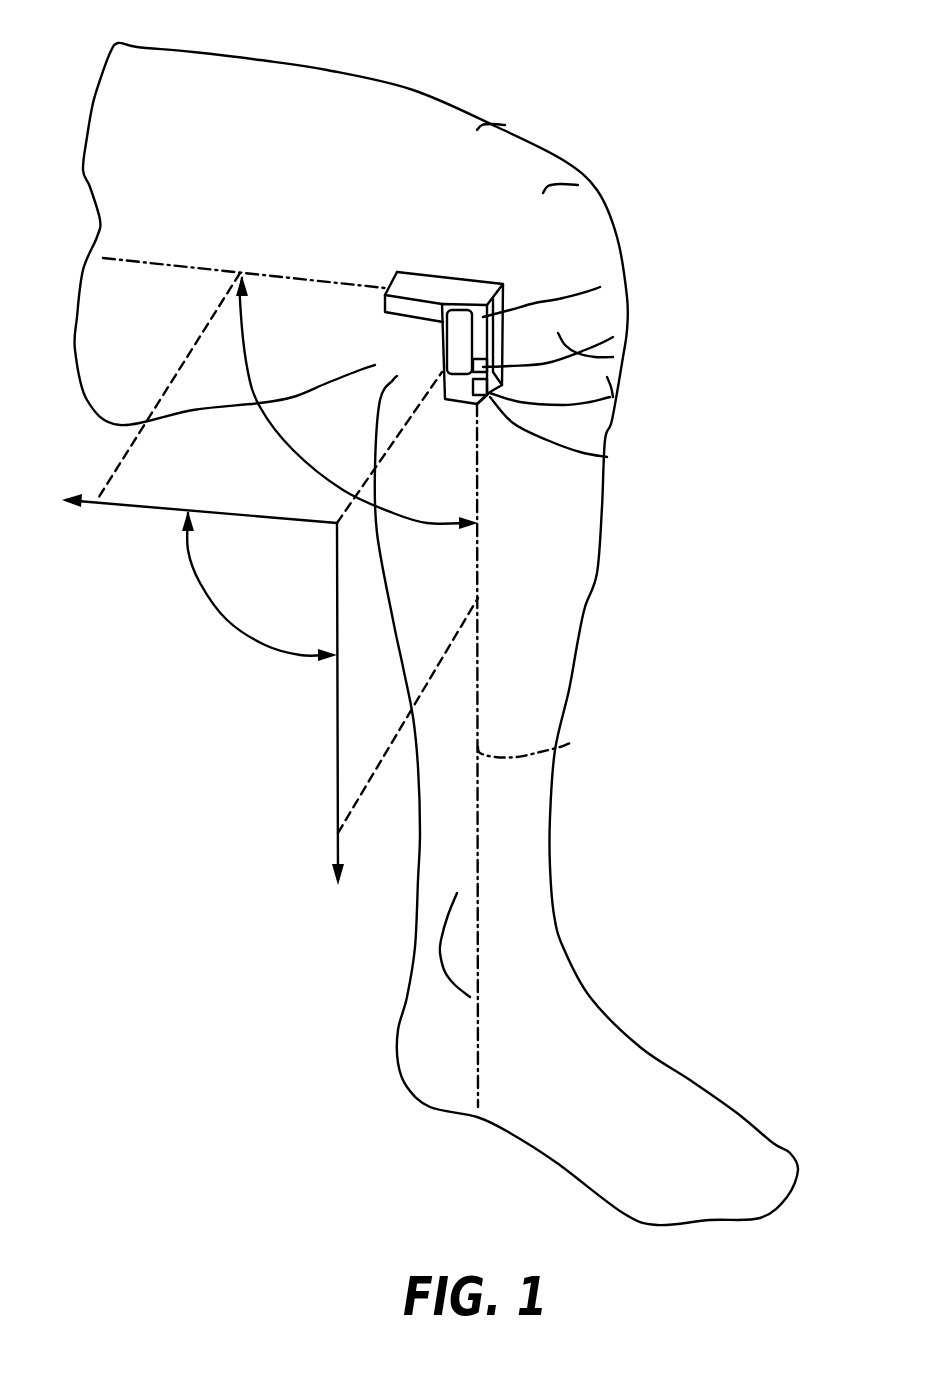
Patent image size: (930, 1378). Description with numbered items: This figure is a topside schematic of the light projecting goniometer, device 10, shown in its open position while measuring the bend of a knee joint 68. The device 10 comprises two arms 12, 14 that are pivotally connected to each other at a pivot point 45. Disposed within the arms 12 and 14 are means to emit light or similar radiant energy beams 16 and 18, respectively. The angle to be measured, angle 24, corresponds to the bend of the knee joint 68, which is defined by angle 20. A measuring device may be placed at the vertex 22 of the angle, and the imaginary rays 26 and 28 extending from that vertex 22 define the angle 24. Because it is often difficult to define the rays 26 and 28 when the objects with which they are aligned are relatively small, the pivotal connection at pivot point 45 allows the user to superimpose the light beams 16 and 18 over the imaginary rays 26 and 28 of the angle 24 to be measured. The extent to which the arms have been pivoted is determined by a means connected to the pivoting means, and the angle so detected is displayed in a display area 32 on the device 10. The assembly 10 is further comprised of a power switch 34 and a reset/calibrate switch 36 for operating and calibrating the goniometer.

The device 10 is at (530, 261).
The arm 12 is at (430, 280).
The arm 14 is at (607, 457).
The light beam 16 is at (288, 278).
The light beam 18 is at (570, 743).
The angle 20 is at (277, 433).
The vertex 22 is at (337, 523).
The angle 24 is at (222, 620).
The ray 26 is at (150, 510).
The ray 28 is at (337, 760).
The display area 32 is at (610, 397).
The power switch 34 is at (452, 300).
The reset/calibrate switch 36 is at (613, 337).
The pivot point 45 is at (600, 287).
The knee joint 68 is at (400, 125).